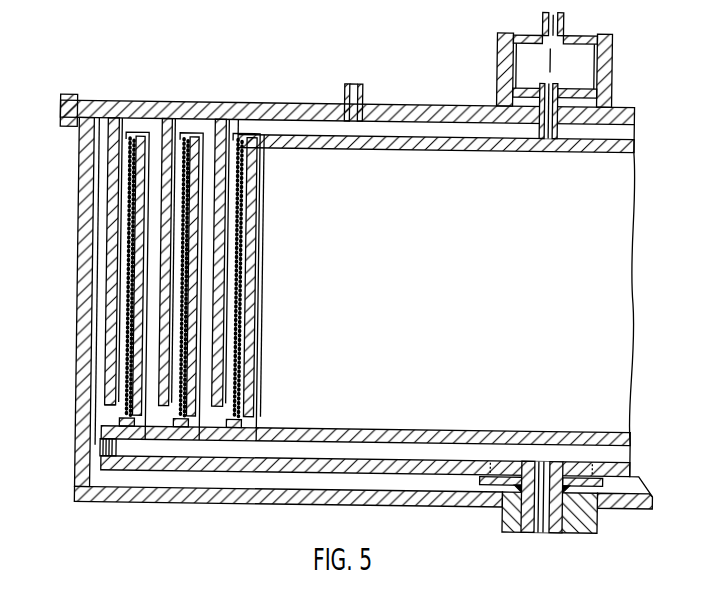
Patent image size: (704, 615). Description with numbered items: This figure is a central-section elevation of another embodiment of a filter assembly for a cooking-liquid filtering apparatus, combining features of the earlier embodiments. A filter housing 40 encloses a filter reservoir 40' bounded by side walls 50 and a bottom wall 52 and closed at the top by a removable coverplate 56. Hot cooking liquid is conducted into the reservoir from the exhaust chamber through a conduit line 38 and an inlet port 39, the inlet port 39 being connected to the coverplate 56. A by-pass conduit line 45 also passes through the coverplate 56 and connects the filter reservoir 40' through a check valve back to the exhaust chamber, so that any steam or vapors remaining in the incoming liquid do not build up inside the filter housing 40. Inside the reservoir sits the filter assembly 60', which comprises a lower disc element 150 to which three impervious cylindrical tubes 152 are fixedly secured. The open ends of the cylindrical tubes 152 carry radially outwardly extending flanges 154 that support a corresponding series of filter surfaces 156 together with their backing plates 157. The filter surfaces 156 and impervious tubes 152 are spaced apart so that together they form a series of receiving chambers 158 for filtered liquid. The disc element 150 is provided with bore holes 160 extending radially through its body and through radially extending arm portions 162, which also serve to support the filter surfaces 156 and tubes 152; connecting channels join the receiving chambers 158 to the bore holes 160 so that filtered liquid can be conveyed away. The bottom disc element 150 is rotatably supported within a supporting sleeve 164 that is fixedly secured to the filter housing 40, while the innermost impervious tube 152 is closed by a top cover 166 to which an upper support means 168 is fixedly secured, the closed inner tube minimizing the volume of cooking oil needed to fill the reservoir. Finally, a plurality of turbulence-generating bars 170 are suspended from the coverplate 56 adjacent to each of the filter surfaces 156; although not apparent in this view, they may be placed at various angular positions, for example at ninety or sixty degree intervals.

The conduit line 38 is at (564, 15).
The inlet port 39 is at (602, 69).
The filter housing 40 is at (59, 281).
The filter reservoir 40' is at (197, 234).
The by-pass conduit line 45 is at (356, 99).
The side walls 50 is at (88, 338).
The bottom wall 52 is at (148, 500).
The coverplate 56 is at (270, 109).
The filter assembly 60' is at (75, 427).
The lower disc element 150 is at (327, 432).
The impervious cylindrical tubes 152 is at (121, 363).
The radially outwardly extending flanges 154 is at (130, 140).
The filter surfaces 156 is at (252, 204).
The backing plates 157 is at (243, 313).
The receiving chambers 158 is at (267, 256).
The bore holes 160 is at (407, 459).
The arm portions 162 is at (127, 461).
The supporting sleeve 164 is at (506, 508).
The top cover 166 is at (380, 145).
The upper support means 168 is at (556, 128).
The turbulence-generating bars 170 is at (156, 128).